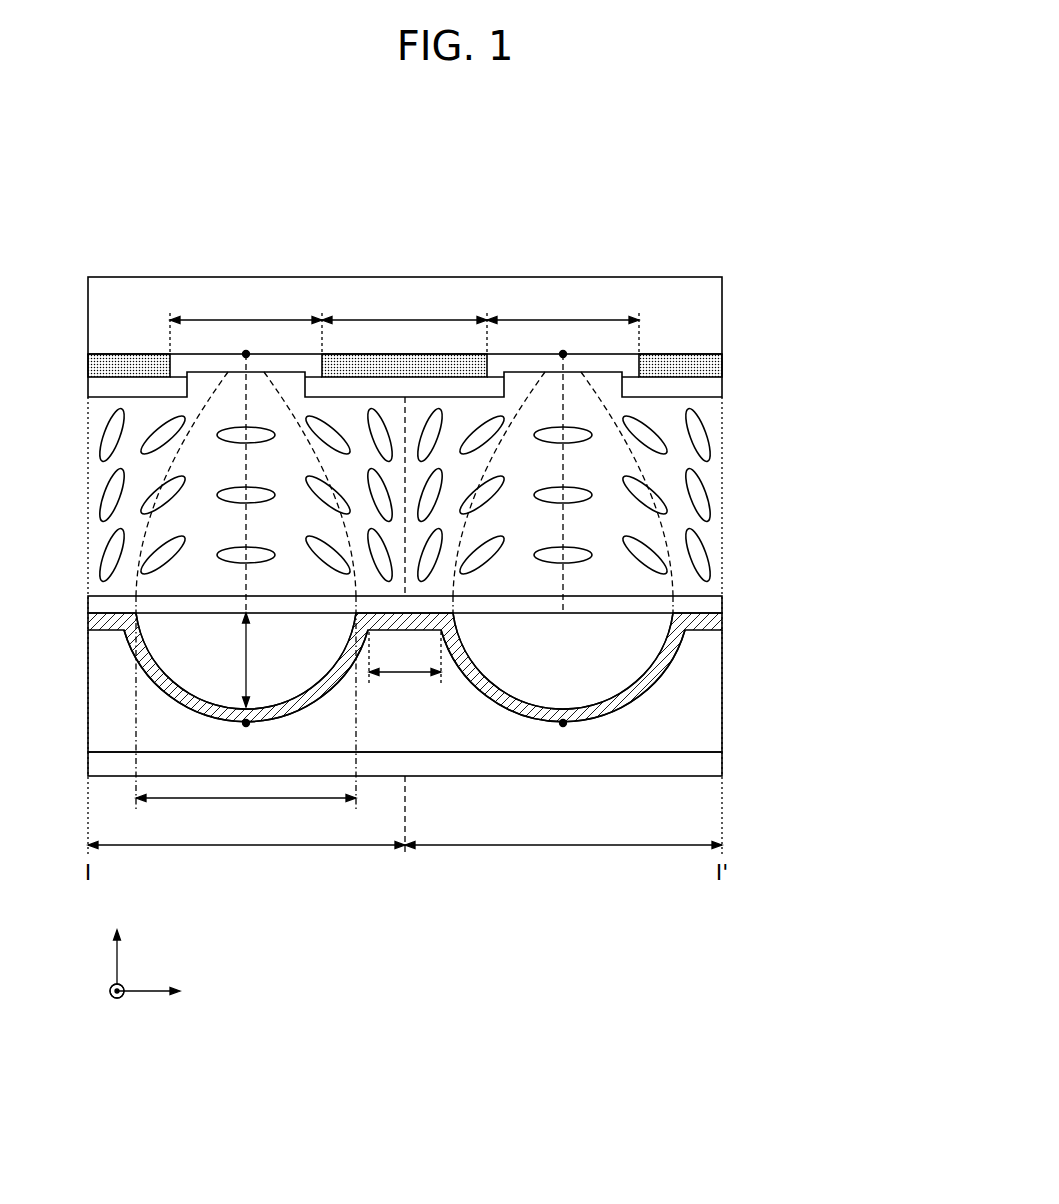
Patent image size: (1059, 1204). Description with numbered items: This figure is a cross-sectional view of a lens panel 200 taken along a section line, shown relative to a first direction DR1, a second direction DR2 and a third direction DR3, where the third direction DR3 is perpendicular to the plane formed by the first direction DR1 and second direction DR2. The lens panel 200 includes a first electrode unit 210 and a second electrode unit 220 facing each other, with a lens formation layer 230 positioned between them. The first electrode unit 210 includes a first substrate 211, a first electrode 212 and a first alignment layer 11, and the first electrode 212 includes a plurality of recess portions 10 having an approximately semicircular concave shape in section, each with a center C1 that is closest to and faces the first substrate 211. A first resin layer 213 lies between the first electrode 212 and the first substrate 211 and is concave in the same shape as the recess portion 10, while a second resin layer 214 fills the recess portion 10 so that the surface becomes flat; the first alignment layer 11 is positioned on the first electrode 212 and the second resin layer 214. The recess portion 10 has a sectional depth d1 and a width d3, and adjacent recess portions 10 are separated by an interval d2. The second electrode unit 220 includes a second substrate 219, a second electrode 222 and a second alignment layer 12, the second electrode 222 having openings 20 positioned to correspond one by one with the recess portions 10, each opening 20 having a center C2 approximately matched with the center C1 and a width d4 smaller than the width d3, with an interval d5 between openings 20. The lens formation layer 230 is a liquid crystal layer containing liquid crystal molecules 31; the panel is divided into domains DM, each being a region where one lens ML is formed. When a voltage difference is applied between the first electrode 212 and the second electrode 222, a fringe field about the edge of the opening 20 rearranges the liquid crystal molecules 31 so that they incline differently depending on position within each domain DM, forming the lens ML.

The lens panel 200 is at (676, 238).
The second electrode unit 220 is at (463, 342).
The second substrate 219 is at (707, 305).
The second electrode 222 is at (710, 363).
The second alignment layer 12 is at (434, 379).
The opening 20 is at (170, 367).
The lens ML is at (272, 415).
The lens formation layer 230 is at (467, 496).
The liquid crystal molecules 31 is at (702, 489).
The first alignment layer 11 is at (707, 603).
The first electrode unit 210 is at (463, 686).
The first electrode 212 is at (710, 622).
The recess portion 10 is at (164, 694).
The second resin layer 214 is at (625, 657).
The first resin layer 213 is at (710, 713).
The first substrate 211 is at (439, 764).
The center of the recess portion C1 is at (421, 736).
The center of the opening C2 is at (418, 470).
The sectional depth of the recess portion d1 is at (261, 660).
The interval between the recess portions d2 is at (405, 667).
The width of the recess portion d3 is at (404, 713).
The width of the opening d4 is at (404, 307).
The interval between the openings d5 is at (404, 307).
The domain DM is at (405, 636).
The first direction DR1 is at (170, 992).
The second direction DR2 is at (108, 1008).
The third direction DR3 is at (117, 943).